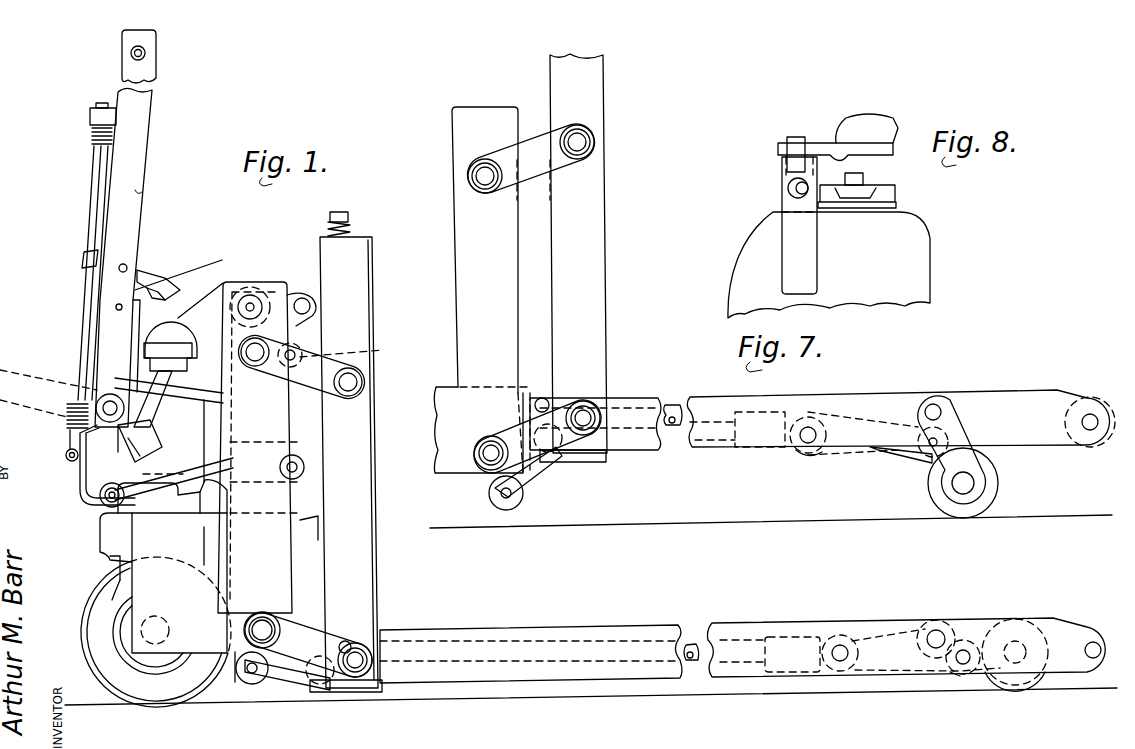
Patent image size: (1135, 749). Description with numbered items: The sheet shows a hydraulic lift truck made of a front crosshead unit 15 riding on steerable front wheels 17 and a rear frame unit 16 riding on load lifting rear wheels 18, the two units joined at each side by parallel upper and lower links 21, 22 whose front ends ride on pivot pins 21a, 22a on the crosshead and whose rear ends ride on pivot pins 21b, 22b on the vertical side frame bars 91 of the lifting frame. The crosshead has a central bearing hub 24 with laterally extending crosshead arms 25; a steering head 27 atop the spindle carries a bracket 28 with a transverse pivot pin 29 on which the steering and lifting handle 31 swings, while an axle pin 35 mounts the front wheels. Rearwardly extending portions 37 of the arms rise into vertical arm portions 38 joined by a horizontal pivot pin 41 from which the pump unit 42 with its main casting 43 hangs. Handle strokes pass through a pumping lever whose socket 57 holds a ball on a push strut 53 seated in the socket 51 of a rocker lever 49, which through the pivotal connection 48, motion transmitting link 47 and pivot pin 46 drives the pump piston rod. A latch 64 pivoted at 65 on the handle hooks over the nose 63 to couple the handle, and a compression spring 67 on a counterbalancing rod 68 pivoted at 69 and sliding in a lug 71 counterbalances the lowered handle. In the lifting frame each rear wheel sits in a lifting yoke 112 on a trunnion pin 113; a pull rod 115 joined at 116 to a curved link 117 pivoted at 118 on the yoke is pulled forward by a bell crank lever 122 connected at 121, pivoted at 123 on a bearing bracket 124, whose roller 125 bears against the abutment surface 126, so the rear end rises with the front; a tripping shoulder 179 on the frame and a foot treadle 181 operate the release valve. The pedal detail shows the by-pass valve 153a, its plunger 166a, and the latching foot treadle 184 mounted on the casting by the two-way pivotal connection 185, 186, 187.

In FIG. 1, the front crosshead unit 15 is at (98, 521).
In FIG. 1, the rear frame unit 16 is at (537, 616).
In FIG. 7, the rear frame unit 16 is at (710, 462).
In FIG. 1, the steerable front wheels 17 is at (88, 660).
In FIG. 1, the load lifting rear wheels 18 is at (1015, 686).
In FIG. 7, the load lifting rear wheels 18 is at (1000, 485).
In FIG. 1, the upper connecting link 21 is at (320, 372).
In FIG. 7, the upper connecting link 21 is at (532, 145).
In FIG. 1, the upper front pivot pin 21a is at (254, 366).
In FIG. 7, the upper front pivot pin 21a is at (478, 176).
In FIG. 1, the upper rear pivot pin 21b is at (360, 390).
In FIG. 7, the upper rear pivot pin 21b is at (585, 150).
In FIG. 1, the lower connecting link 22 is at (328, 638).
In FIG. 7, the lower connecting link 22 is at (508, 432).
In FIG. 1, the lower front pivot pin 22a is at (260, 624).
In FIG. 7, the lower front pivot pin 22a is at (490, 448).
In FIG. 1, the lower rear pivot pin 22b is at (366, 650).
In FIG. 7, the lower rear pivot pin 22b is at (583, 410).
In FIG. 1, the central bearing hub 24 is at (110, 558).
In FIG. 1, the crosshead arms 25 is at (112, 582).
In FIG. 1, the steering head 27 is at (172, 500).
In FIG. 1, the bracket 28 is at (86, 475).
In FIG. 1, the transverse pivot pin 29 is at (110, 394).
In FIG. 1, the steering and lifting handle 31 is at (150, 194).
In FIG. 1, the axle pin 35 is at (160, 624).
In FIG. 1, the rearwardly extending portion 37 is at (220, 500).
In FIG. 1, the vertical arm portion 38 is at (340, 538).
In FIG. 7, the vertical arm portion 38 is at (452, 280).
In FIG. 1, the horizontal pivot pin 41 is at (252, 300).
In FIG. 1, the pump unit 42 is at (316, 525).
In FIG. 8, the main casting 43 is at (905, 262).
In FIG. 1, the pivot pin 46 is at (383, 351).
In FIG. 1, the motion transmitting link 47 is at (300, 346).
In FIG. 1, the pivotal connection 48 is at (300, 296).
In FIG. 1, the rocker lever 49 is at (222, 290).
In FIG. 1, the semi-spherical socket 51 is at (165, 330).
In FIG. 1, the push strut 53 is at (155, 402).
In FIG. 1, the semi-spherical socket 57 is at (150, 442).
In FIG. 1, the nose 63 is at (162, 284).
In FIG. 1, the latch 64 is at (178, 290).
In FIG. 1, the latch pivot 65 is at (127, 266).
In FIG. 1, the compression spring 67 is at (92, 138).
In FIG. 1, the counterbalancing rod 68 is at (98, 172).
In FIG. 1, the rod pivot connection 69 is at (70, 452).
In FIG. 1, the lug 71 is at (90, 115).
In FIG. 1, the side frame bars 91 is at (378, 496).
In FIG. 7, the side frame bars 91 is at (606, 256).
In FIG. 1, the lifting yoke 112 is at (965, 640).
In FIG. 7, the lifting yoke 112 is at (972, 450).
In FIG. 1, the trunnion pin 113 is at (934, 628).
In FIG. 7, the trunnion pin 113 is at (936, 402).
In FIG. 1, the pull rod 115 is at (690, 640).
In FIG. 7, the pull rod 115 is at (675, 402).
In FIG. 1, the pivotal connection 116 is at (835, 644).
In FIG. 7, the pivotal connection 116 is at (810, 428).
In FIG. 1, the curved link 117 is at (855, 672).
In FIG. 7, the curved link 117 is at (856, 420).
In FIG. 1, the pivotal connection 118 is at (950, 676).
In FIG. 7, the pivotal connection 118 is at (918, 462).
In FIG. 1, the pivotal connection 121 is at (346, 640).
In FIG. 7, the pivotal connection 121 is at (541, 398).
In FIG. 1, the bell crank lever 122 is at (292, 680).
In FIG. 7, the bell crank lever 122 is at (538, 474).
In FIG. 1, the bell crank pivot 123 is at (322, 684).
In FIG. 7, the bell crank pivot 123 is at (552, 452).
In FIG. 1, the bearing bracket 124 is at (370, 692).
In FIG. 7, the bearing bracket 124 is at (596, 460).
In FIG. 1, the roller 125 is at (250, 684).
In FIG. 7, the roller 125 is at (500, 508).
In FIG. 1, the abutment surface 126 is at (236, 682).
In FIG. 8, the by-pass valve 153a is at (907, 200).
In FIG. 8, the valve opening plunger 166a is at (863, 180).
In FIG. 1, the tripping shoulder 179 is at (304, 446).
In FIG. 1, the foot treadle 181 is at (186, 460).
In FIG. 8, the latching foot treadle 184 is at (882, 128).
In FIG. 8, the two-way pivotal connection 185 is at (795, 137).
In FIG. 8, the two-way pivotal connection 186 is at (782, 170).
In FIG. 8, the two-way pivotal connection 187 is at (789, 190).